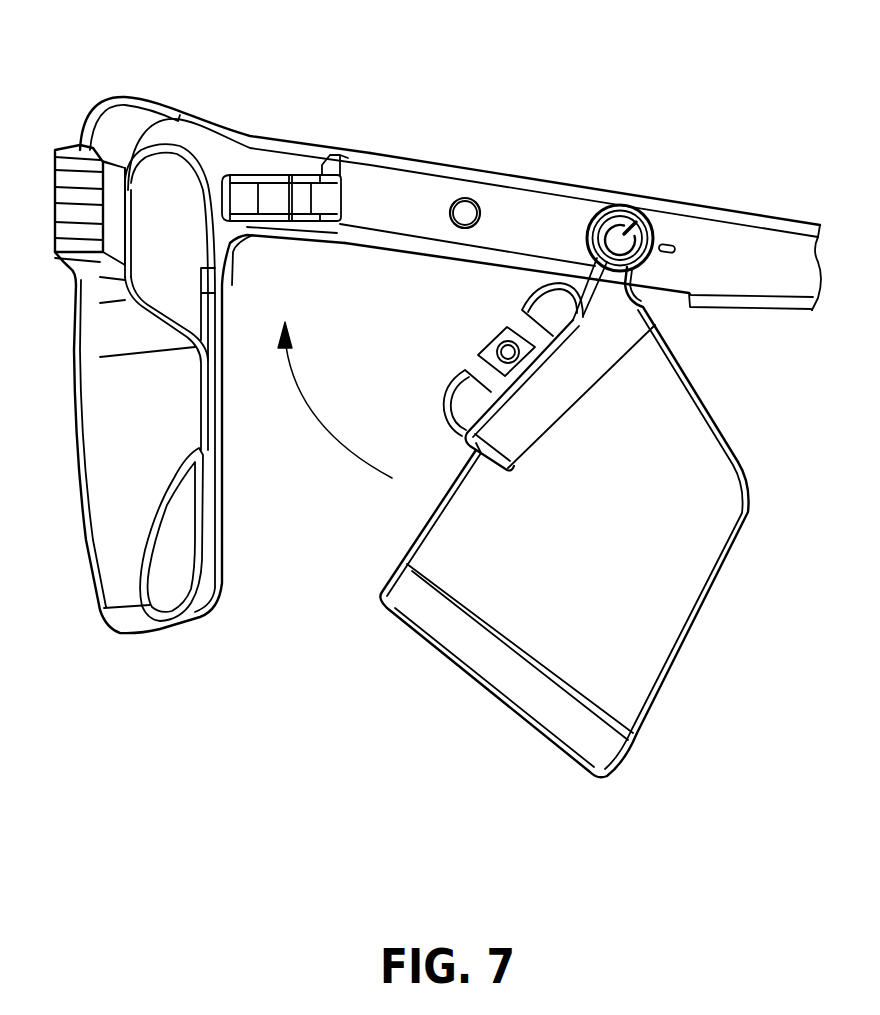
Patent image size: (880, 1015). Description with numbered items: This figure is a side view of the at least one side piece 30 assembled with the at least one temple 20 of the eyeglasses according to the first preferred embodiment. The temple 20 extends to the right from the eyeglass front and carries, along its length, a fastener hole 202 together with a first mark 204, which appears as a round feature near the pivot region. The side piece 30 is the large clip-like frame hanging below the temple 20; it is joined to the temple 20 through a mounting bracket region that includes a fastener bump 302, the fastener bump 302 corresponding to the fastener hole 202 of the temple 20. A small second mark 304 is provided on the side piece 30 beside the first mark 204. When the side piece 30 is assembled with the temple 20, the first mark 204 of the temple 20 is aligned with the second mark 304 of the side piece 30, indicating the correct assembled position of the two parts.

The temple 20 is at (755, 265).
The fastener hole 202 is at (464, 212).
The first mark 204 is at (630, 232).
The second mark 304 is at (670, 247).
The fastener bump 302 is at (508, 350).
The side piece 30 is at (518, 680).